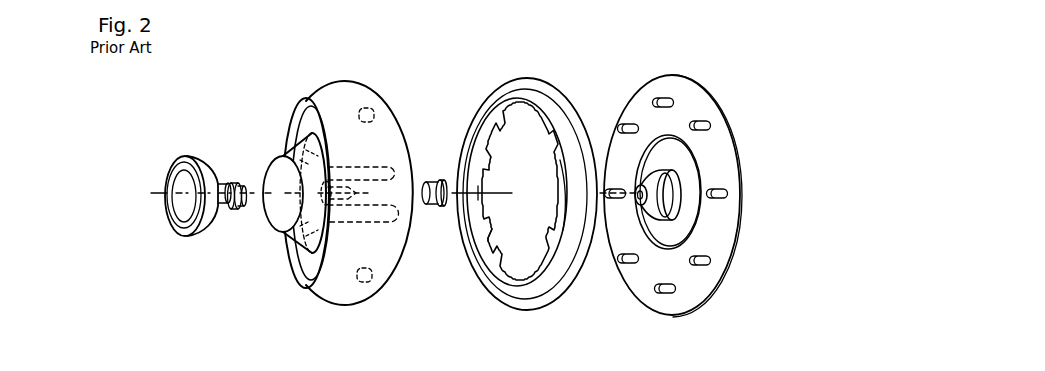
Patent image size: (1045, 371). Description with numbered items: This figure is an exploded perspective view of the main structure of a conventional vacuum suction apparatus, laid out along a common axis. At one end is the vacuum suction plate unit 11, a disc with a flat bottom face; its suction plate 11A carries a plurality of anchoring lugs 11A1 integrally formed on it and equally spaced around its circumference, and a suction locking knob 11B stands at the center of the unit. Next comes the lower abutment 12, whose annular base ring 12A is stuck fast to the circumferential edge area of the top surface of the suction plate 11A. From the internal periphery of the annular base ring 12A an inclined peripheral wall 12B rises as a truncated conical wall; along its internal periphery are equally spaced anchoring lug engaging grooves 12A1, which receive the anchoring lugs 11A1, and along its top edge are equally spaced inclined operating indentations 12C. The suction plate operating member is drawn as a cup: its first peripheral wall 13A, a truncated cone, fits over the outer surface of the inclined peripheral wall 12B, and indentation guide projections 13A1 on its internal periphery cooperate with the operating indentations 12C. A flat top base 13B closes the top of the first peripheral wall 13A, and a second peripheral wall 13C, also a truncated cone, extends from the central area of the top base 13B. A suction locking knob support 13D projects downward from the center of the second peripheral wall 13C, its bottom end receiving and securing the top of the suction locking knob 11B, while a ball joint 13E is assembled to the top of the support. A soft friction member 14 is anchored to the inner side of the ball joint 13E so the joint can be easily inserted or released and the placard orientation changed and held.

The vacuum suction plate unit 11 is at (695, 186).
The suction plate 11A is at (715, 225).
The anchoring lugs 11A1 is at (710, 163).
The suction locking knob 11B is at (652, 205).
The lower abutment 12 is at (499, 194).
The annular base ring 12A is at (567, 222).
The inclined peripheral wall 12B is at (532, 292).
The inclined operating indentations 12C is at (563, 292).
The anchoring lug engaging grooves 12A1 is at (492, 255).
The first peripheral wall 13A is at (324, 98).
The indentation guide projections 13A1 is at (362, 106).
The top base 13B is at (294, 114).
The second peripheral wall 13C is at (284, 148).
The suction locking knob support 13D is at (348, 222).
The ball joint 13E is at (281, 218).
The soft friction member 14 is at (182, 236).